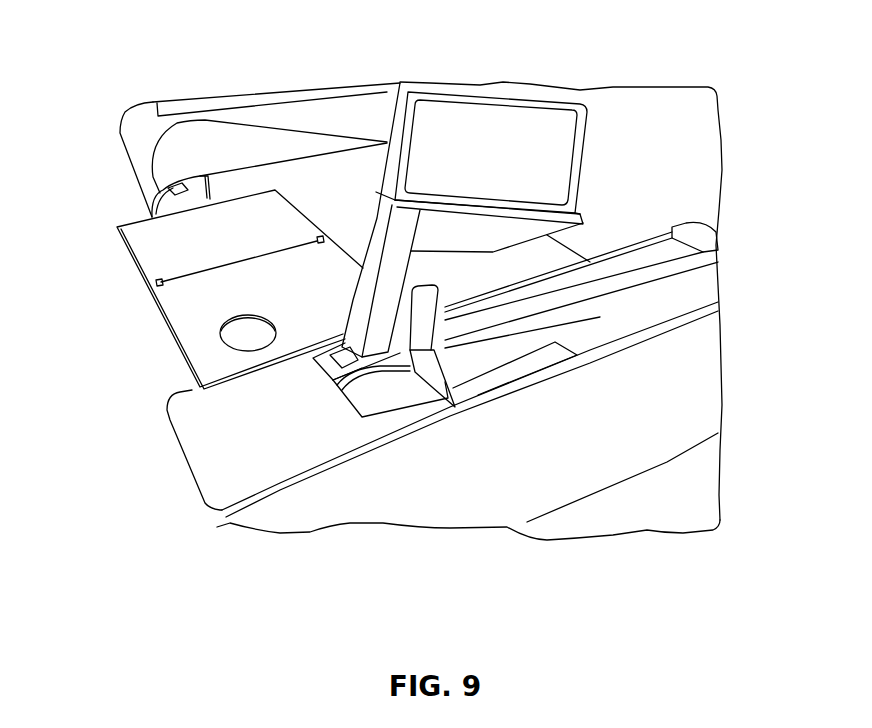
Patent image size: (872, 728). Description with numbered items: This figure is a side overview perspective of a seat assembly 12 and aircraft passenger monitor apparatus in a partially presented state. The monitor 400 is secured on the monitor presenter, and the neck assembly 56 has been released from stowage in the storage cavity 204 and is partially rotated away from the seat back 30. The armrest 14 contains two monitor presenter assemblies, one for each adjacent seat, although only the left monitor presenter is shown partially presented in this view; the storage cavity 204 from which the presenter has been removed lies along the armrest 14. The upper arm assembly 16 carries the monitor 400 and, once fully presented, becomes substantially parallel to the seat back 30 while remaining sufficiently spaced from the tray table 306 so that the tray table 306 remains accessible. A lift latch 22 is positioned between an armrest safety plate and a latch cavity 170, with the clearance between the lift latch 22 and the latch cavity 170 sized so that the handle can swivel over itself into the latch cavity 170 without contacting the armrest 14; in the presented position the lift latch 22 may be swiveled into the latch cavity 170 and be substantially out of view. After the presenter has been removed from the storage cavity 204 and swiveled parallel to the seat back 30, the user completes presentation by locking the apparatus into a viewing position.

The seat assembly 12 is at (218, 138).
The armrest 14 is at (262, 98).
The upper arm assembly 16 is at (316, 240).
The lift latch 22 is at (323, 358).
The seat back 30 is at (707, 160).
The neck assembly 56 is at (367, 290).
The latch cavity 170 is at (327, 377).
The storage cavity 204 is at (690, 242).
The tray table 306 is at (170, 243).
The monitor 400 is at (520, 118).